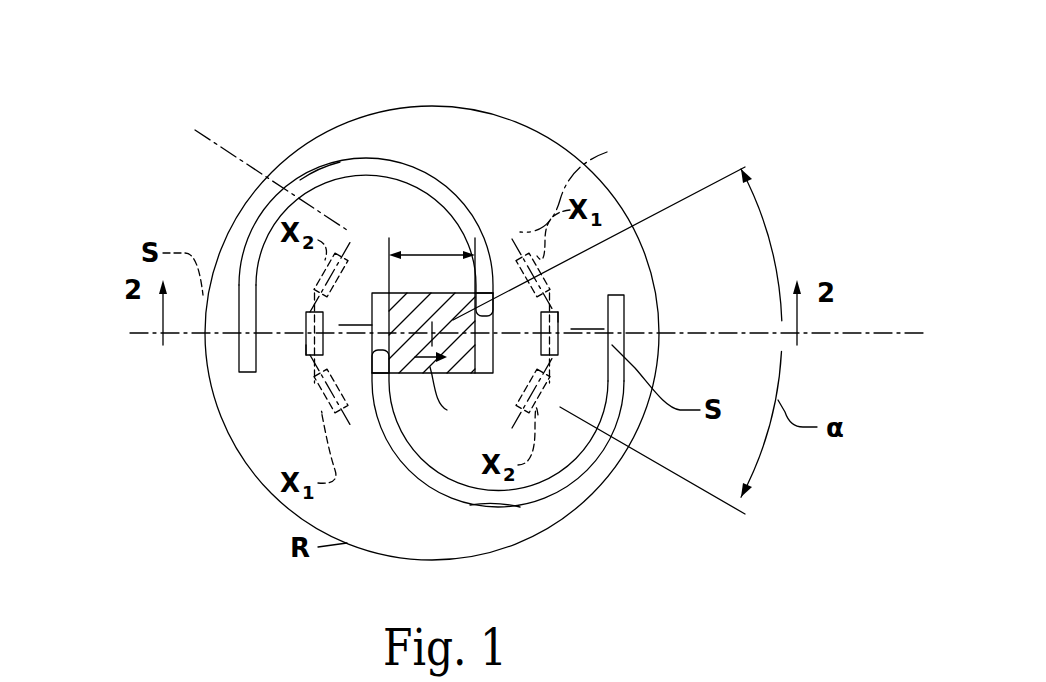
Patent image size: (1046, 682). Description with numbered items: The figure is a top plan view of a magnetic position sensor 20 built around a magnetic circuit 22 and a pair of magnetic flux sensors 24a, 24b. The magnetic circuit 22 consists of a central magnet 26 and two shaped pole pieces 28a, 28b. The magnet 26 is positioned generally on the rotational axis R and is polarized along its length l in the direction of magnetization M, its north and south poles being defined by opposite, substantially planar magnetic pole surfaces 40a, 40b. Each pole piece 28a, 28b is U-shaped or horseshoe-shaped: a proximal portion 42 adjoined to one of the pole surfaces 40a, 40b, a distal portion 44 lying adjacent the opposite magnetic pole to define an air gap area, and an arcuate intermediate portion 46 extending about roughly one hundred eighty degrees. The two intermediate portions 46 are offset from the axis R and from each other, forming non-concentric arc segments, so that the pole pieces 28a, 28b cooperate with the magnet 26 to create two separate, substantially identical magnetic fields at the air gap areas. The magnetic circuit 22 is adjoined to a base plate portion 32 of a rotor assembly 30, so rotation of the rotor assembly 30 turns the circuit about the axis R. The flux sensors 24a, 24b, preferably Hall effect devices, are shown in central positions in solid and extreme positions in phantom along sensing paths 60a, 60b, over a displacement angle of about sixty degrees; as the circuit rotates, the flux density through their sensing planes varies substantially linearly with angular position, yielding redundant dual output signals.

The magnetic position sensor 20 is at (282, 57).
The magnetic circuit 22 is at (503, 187).
The magnetic flux sensor 24a is at (305, 345).
The magnetic flux sensor 24b is at (560, 307).
The magnet 26 is at (441, 293).
The pole piece 28a is at (262, 237).
The pole piece 28b is at (598, 455).
The rotor assembly 30 is at (540, 549).
The base plate portion 32 is at (425, 520).
The magnetic pole surface 40a is at (478, 292).
The magnetic pole surface 40b is at (303, 312).
The proximal portion 42 is at (392, 333).
The distal portion 44 is at (240, 358).
The intermediate portion 46 is at (313, 176).
The sensing path 60a is at (250, 272).
The sensing path 60b is at (583, 282).